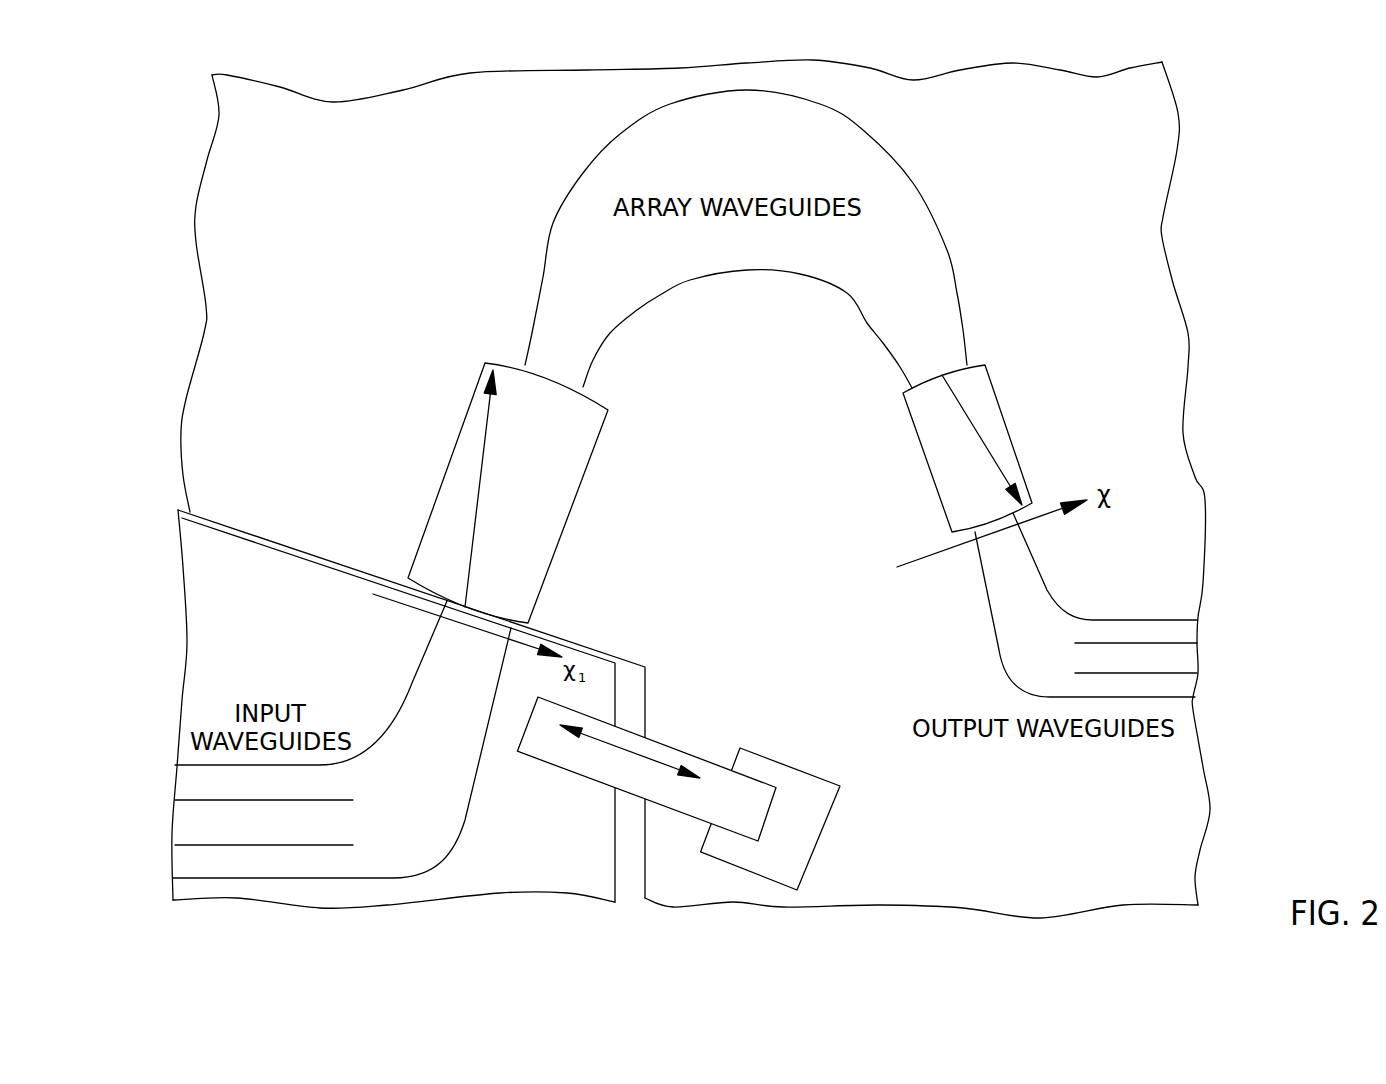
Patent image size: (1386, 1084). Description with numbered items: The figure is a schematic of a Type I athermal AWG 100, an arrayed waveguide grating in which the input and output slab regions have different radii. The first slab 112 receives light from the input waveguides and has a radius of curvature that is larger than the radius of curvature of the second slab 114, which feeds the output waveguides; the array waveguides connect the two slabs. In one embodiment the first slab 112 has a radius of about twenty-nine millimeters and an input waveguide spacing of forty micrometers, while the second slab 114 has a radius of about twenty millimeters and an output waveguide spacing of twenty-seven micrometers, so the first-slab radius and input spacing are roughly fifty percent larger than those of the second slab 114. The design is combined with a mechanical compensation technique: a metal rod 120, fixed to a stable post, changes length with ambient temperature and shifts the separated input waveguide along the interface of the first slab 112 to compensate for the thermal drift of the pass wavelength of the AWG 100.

The Type I athermal AWG 100 is at (775, 437).
The first slab 112 is at (570, 515).
The second slab 114 is at (927, 465).
The metal rod 120 is at (717, 757).